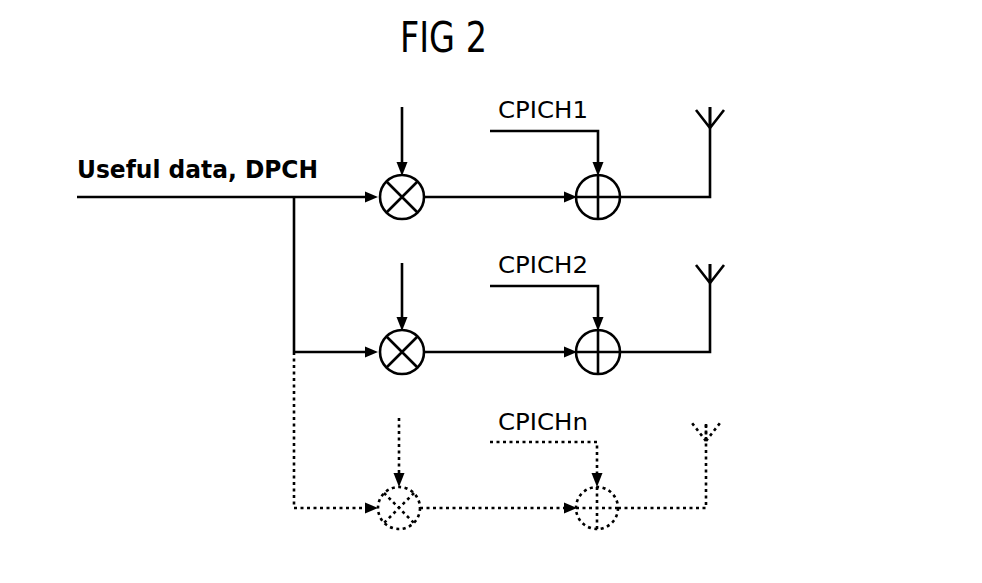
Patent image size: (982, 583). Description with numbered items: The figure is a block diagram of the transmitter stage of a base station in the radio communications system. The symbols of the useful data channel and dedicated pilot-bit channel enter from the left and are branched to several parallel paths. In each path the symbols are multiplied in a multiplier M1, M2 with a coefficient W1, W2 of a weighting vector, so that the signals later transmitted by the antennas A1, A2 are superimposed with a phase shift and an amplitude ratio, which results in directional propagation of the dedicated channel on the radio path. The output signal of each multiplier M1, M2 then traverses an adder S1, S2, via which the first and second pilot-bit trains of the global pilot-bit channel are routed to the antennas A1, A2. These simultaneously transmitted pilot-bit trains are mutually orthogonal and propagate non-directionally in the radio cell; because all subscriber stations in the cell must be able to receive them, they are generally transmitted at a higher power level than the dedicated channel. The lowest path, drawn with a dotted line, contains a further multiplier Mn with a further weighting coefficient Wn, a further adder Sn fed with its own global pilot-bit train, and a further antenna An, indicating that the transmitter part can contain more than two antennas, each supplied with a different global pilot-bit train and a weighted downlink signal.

The multiplier M1 is at (386, 183).
The multiplier M2 is at (386, 338).
The multiplier Mn is at (384, 495).
The adder S1 is at (614, 183).
The adder S2 is at (614, 338).
The adder Sn is at (613, 495).
The antenna A1 is at (725, 113).
The antenna A2 is at (725, 269).
The antenna An is at (722, 425).
The coefficient of weighting vector W1 is at (401, 117).
The coefficient of weighting vector W2 is at (401, 274).
The coefficient of weighting vector Wn is at (399, 430).